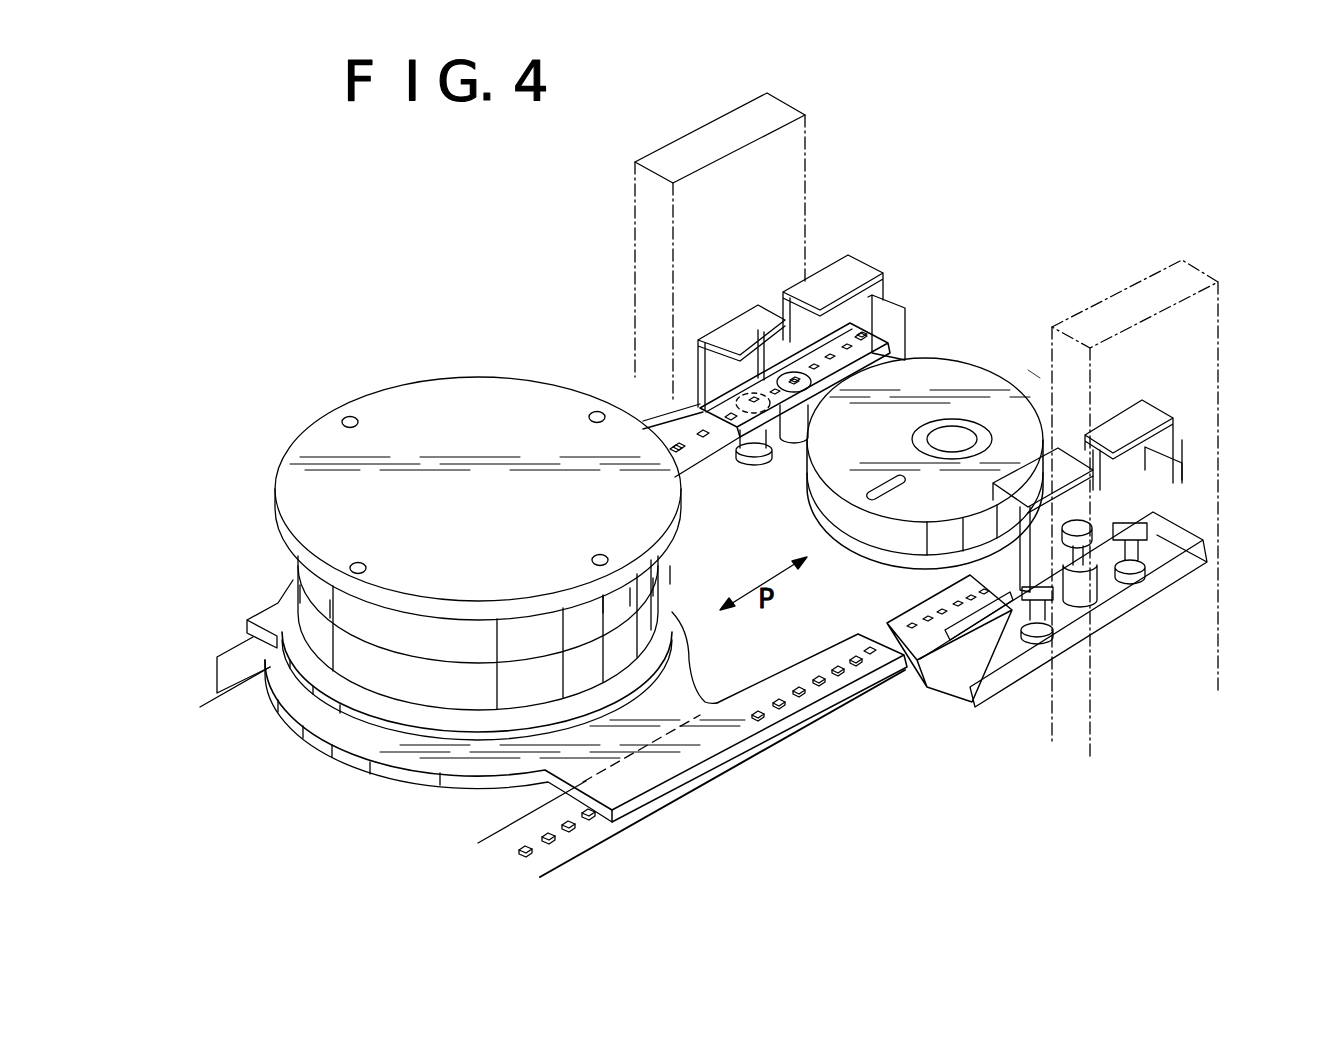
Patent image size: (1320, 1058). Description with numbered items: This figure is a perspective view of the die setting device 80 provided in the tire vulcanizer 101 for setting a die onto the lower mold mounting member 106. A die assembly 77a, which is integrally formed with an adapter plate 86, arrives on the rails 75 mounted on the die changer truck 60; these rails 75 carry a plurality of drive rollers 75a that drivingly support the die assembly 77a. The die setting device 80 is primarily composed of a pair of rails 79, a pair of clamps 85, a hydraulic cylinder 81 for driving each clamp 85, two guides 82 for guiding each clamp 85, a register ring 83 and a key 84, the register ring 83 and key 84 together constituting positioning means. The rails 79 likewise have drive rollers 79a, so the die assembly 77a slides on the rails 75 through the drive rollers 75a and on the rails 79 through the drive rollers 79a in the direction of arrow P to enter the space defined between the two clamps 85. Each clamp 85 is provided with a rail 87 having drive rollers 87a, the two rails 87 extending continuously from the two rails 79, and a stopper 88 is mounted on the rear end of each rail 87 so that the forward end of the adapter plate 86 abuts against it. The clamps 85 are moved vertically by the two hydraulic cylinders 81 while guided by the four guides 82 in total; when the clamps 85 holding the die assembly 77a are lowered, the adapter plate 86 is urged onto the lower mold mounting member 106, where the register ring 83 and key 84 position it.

The die changer truck 60 is at (643, 831).
The inside rails 75 is at (242, 653).
The drive rollers 75a is at (805, 696).
The die assembly 77a is at (273, 560).
The rails 79 is at (678, 443).
The drive rollers 79a is at (683, 450).
The die setting device 80 is at (876, 244).
The hydraulic cylinder 81 is at (1095, 583).
The guides 82 is at (1055, 603).
The register ring 83 is at (958, 415).
The key 84 is at (878, 508).
The clamps 85 is at (718, 301).
The adapter plate 86 is at (268, 620).
The rails 87 is at (880, 343).
The drive rollers 87a is at (862, 333).
The stopper 88 is at (907, 313).
The tire vulcanizer 101 is at (1222, 345).
The lower mold mounting member 106 is at (1030, 375).